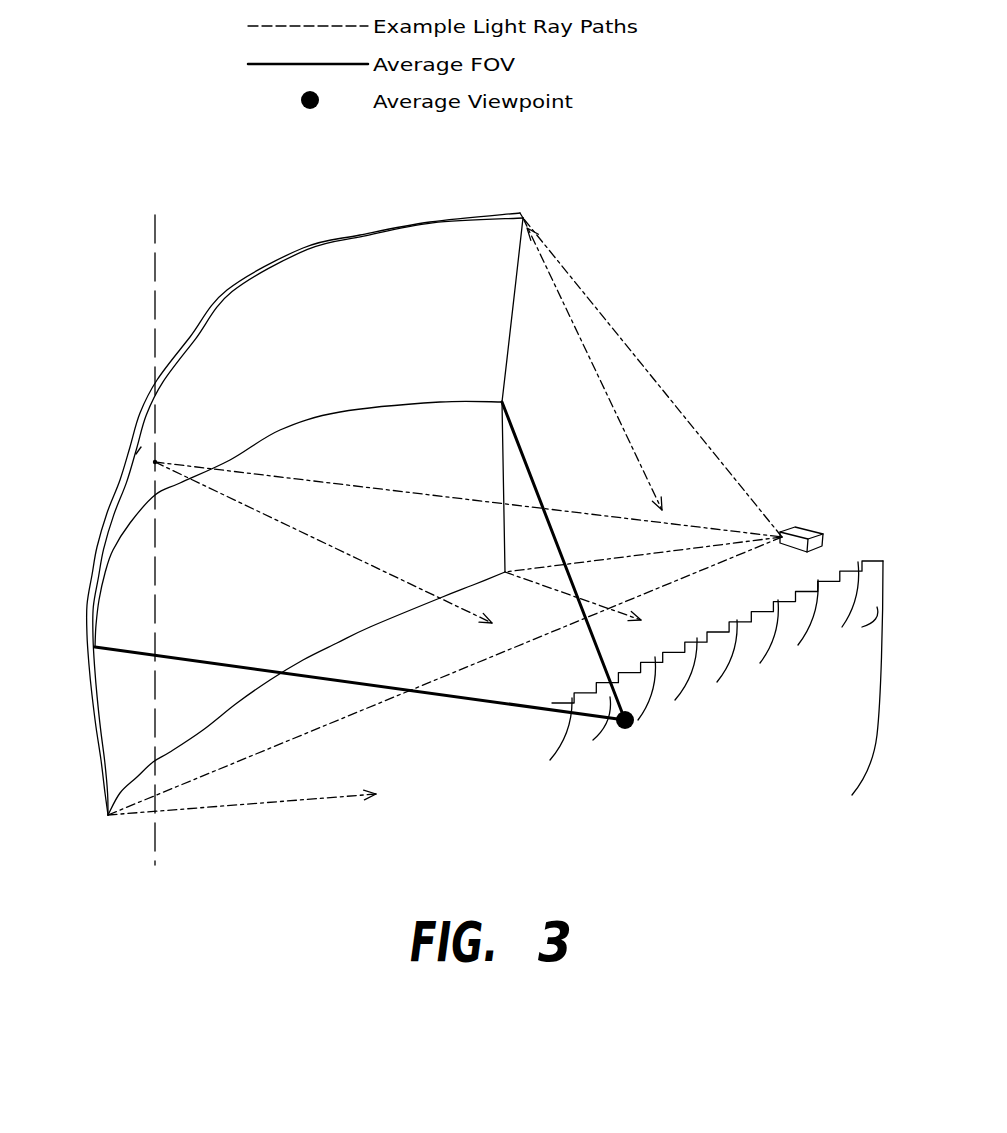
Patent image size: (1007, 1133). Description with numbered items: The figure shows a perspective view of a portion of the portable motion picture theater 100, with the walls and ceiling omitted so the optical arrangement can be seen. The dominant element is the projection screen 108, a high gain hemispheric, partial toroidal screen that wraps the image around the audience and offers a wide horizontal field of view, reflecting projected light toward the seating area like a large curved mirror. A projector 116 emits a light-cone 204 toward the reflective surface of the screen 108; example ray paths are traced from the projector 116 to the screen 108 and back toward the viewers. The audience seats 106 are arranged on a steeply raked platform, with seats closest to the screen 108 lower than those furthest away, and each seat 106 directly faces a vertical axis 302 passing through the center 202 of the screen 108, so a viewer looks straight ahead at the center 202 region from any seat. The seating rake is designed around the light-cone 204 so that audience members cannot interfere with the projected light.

The portable motion picture theater 100 is at (678, 180).
The audience seats 106 is at (817, 578).
The projection screen 108 is at (303, 248).
The projector 116 is at (795, 523).
The center of the screen 202 is at (156, 461).
The light-cone 204 is at (614, 328).
The vertical axis 302 is at (155, 264).